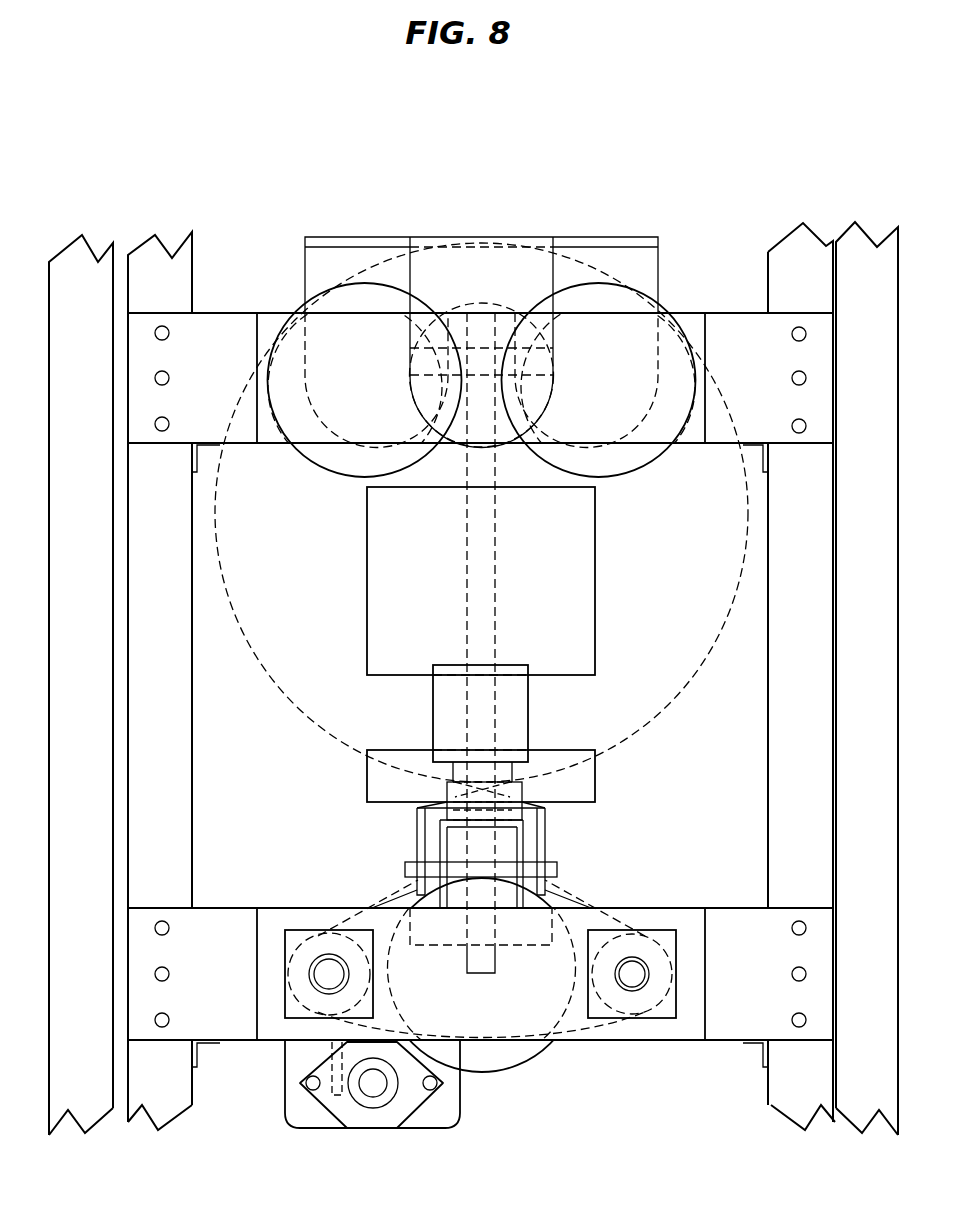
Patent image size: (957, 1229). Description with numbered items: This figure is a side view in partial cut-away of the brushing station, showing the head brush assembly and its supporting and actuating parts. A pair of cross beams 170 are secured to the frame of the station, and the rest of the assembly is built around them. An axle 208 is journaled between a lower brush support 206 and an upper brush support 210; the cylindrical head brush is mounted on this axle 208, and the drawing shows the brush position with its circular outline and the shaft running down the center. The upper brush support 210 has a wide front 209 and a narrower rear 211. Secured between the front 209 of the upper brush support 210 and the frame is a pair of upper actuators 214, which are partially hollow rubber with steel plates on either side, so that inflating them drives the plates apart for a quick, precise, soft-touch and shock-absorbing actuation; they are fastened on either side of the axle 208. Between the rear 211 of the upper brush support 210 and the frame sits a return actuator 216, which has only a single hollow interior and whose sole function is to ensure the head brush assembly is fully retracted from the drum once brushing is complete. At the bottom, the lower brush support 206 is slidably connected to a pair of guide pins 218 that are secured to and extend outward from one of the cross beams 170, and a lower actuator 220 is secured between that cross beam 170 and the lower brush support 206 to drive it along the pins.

The cross beam 170 is at (270, 1030).
The lower brush support 206 is at (582, 1010).
The axle 208 is at (482, 323).
The front of upper brush support 209 is at (647, 267).
The upper brush support 210 is at (600, 237).
The rear of upper brush support 211 is at (517, 270).
The upper actuator 214 is at (303, 306).
The return actuator 216 is at (456, 322).
The guide pin 218 is at (635, 975).
The lower actuator 220 is at (497, 1057).